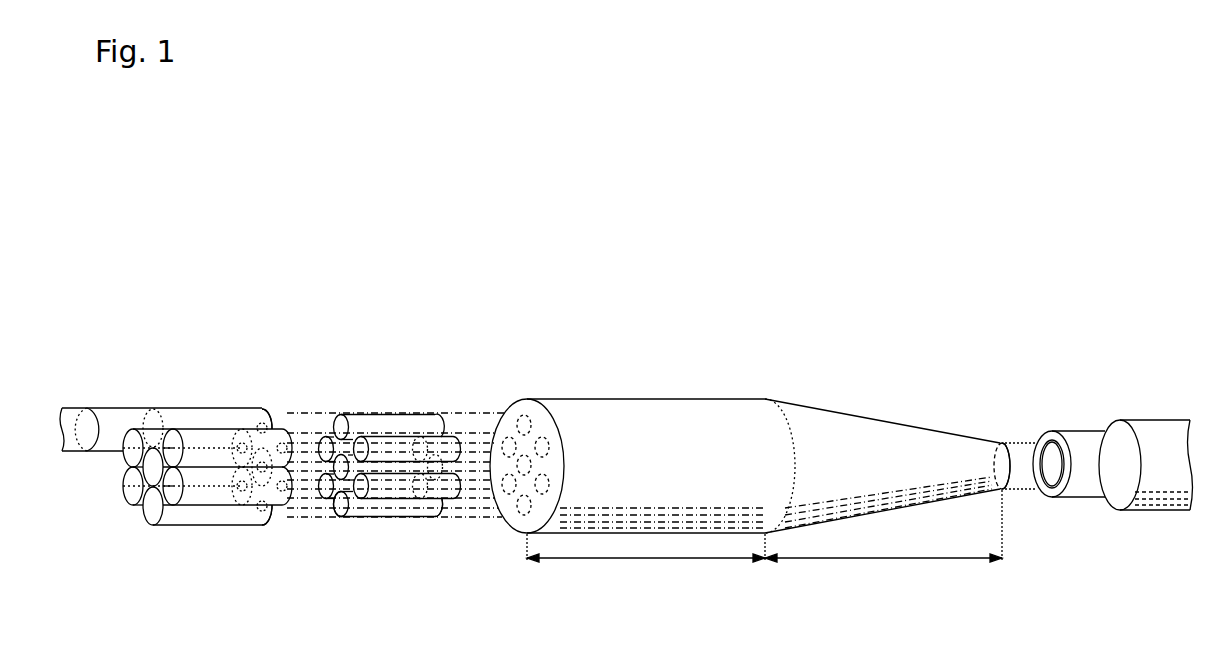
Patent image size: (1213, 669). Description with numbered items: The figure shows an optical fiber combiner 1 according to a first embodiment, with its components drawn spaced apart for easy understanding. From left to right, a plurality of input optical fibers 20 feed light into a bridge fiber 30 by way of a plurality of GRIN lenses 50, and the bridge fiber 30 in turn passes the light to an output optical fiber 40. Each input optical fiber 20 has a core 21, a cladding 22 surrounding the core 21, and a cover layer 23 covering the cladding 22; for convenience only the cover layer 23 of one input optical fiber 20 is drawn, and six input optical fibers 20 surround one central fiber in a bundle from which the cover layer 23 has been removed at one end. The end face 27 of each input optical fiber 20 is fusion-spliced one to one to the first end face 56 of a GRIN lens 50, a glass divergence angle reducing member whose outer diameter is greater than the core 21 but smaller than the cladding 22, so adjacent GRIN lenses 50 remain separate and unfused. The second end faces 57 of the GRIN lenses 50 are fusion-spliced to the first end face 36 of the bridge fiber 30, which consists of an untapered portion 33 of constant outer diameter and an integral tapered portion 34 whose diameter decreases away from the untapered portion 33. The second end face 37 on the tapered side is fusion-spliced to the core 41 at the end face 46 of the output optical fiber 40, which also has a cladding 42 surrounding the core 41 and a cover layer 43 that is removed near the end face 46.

The optical fiber combiner 1 is at (726, 249).
The input optical fiber 20 is at (180, 410).
The core 21 is at (250, 410).
The cladding 22 is at (140, 408).
The cover layer 23 is at (75, 405).
The end face 27 is at (280, 520).
The bridge fiber 30 is at (758, 404).
The untapered portion 33 is at (646, 560).
The tapered portion 34 is at (883, 538).
The first end face 36 is at (507, 518).
The second end face 37 is at (1023, 470).
The output optical fiber 40 is at (1145, 420).
The core 41 is at (1048, 466).
The cladding 42 is at (1067, 440).
The cover layer 43 is at (1110, 428).
The end face 46 is at (1052, 482).
The GRIN lens 50 is at (325, 440).
The first end face 56 is at (335, 518).
The second end face 57 is at (442, 518).